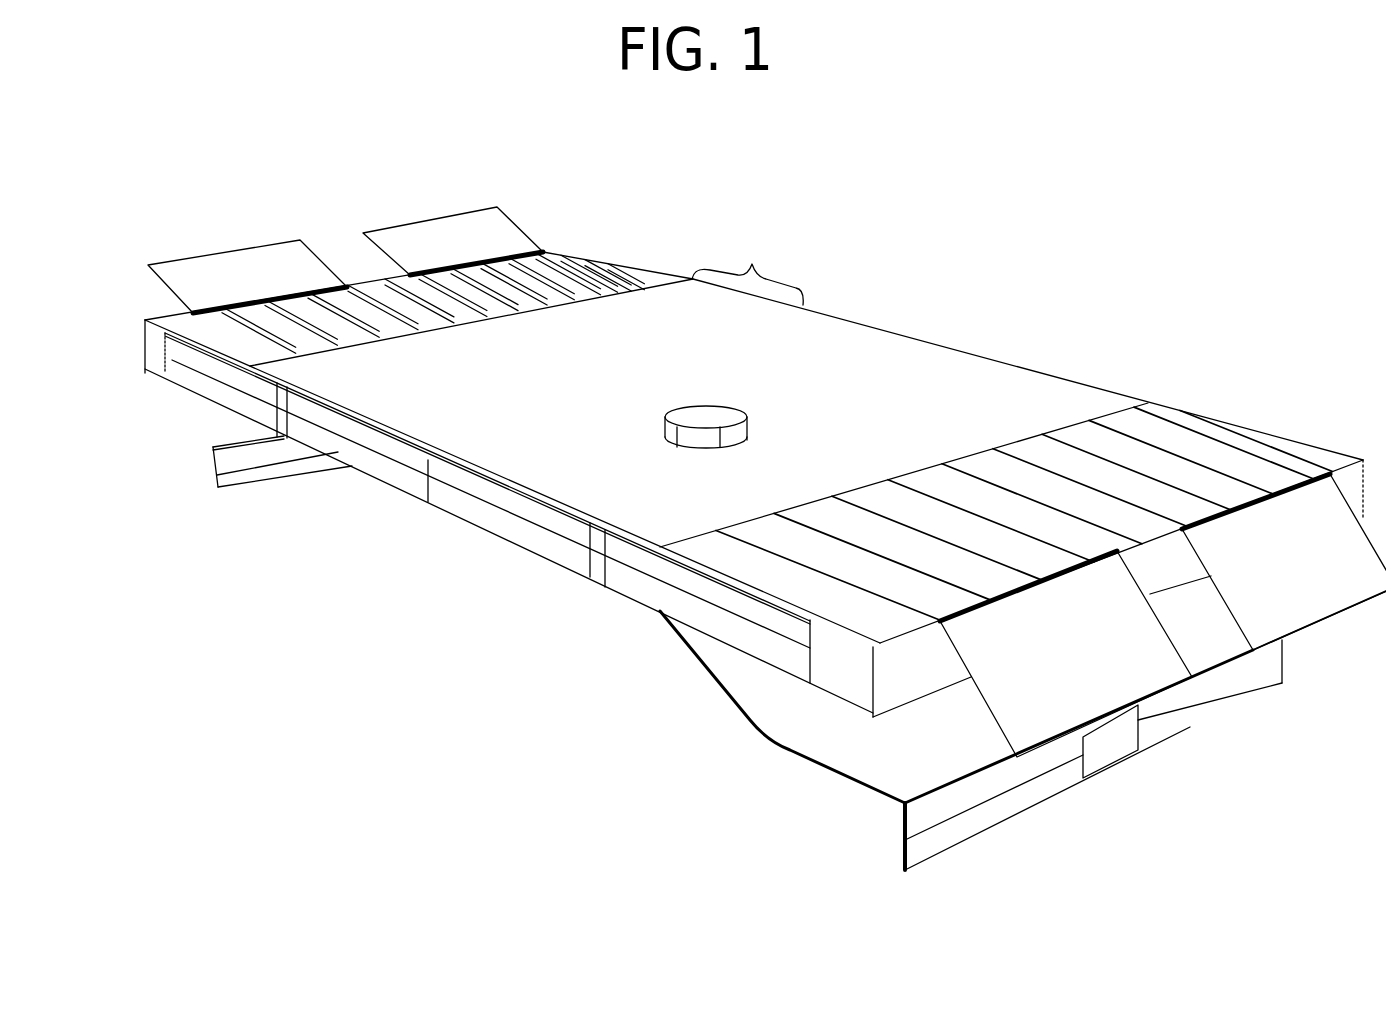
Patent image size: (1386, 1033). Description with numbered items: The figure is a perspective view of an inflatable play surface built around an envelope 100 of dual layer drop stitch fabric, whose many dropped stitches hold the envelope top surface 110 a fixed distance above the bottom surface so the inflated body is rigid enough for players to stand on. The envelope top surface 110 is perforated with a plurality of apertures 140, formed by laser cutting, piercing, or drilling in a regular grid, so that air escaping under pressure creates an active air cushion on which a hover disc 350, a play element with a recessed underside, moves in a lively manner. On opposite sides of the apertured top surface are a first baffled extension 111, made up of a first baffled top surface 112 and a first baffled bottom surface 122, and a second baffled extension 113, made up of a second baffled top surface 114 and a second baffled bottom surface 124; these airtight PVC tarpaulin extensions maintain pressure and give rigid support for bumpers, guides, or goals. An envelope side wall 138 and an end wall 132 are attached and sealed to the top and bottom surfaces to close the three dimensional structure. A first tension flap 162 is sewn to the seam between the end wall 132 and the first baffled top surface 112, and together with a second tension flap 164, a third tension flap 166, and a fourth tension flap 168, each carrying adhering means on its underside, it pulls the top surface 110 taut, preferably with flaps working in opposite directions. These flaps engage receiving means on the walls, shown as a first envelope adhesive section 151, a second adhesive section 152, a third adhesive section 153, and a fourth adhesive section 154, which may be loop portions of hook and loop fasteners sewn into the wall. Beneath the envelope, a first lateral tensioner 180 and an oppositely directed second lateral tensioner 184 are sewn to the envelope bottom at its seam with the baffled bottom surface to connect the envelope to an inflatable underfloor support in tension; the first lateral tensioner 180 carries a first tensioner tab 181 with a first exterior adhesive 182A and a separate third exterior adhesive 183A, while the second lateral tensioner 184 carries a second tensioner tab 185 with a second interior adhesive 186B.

The envelope 100 is at (1008, 320).
The envelope top surface 110 is at (830, 344).
The first baffled extension 111 is at (1024, 487).
The first baffled top surface 112 is at (1285, 447).
The second baffled extension 113 is at (434, 274).
The second baffled top surface 114 is at (568, 270).
The first baffled bottom surface 122 is at (840, 700).
The second baffled bottom surface 124 is at (158, 375).
The end wall 132 is at (897, 682).
The envelope side wall 138 is at (600, 548).
The plurality of apertures 140 is at (747, 280).
The first envelope adhesive section 151 is at (197, 380).
The second adhesive section 152 is at (362, 463).
The third adhesive section 153 is at (473, 512).
The fourth adhesive section 154 is at (637, 583).
The first tension flap 162 is at (1043, 725).
The second tension flap 164 is at (1318, 598).
The third tension flap 166 is at (222, 266).
The fourth tension flap 168 is at (472, 233).
The first lateral tensioner 180 is at (720, 651).
The first tensioner tab 181 is at (1100, 758).
The first exterior adhesive 182A is at (917, 845).
The third exterior adhesive 183A is at (1228, 697).
The second lateral tensioner 184 is at (246, 487).
The second tensioner tab 185 is at (217, 475).
The second interior adhesive 186B is at (241, 485).
The hover disc 350 is at (712, 411).